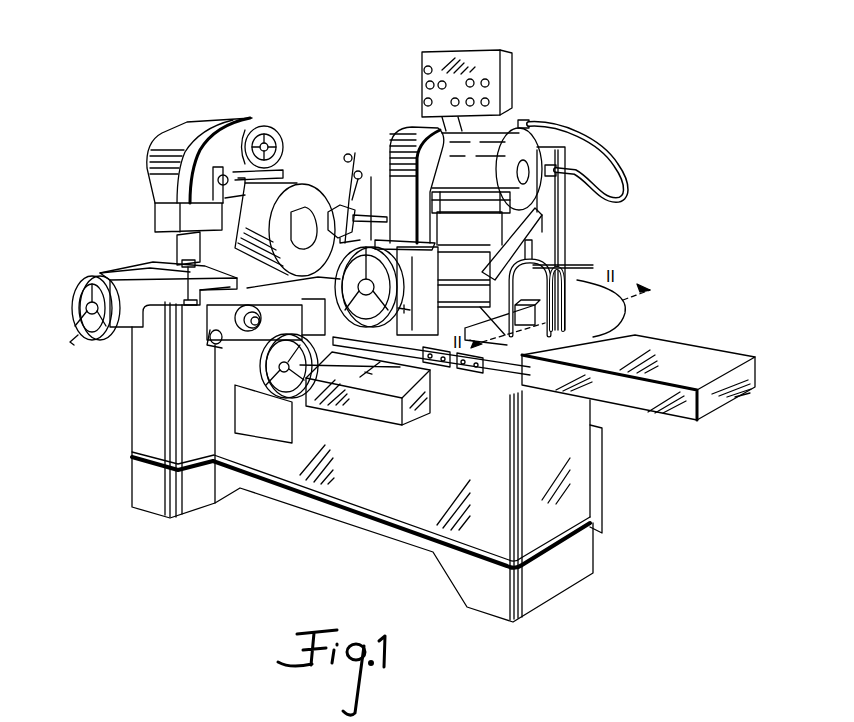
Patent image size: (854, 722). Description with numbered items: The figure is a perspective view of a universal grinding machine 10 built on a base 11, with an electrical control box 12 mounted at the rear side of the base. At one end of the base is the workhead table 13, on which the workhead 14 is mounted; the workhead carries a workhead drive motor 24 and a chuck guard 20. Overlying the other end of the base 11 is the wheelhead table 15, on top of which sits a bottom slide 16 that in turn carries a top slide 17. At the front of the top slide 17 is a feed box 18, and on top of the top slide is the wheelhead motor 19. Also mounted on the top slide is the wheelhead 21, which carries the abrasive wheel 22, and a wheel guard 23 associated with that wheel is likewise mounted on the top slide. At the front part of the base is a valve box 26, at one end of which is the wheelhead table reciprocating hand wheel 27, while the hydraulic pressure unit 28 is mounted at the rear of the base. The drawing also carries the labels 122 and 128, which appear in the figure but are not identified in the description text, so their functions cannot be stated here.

The grinding machine 10 is at (574, 130).
The base 11 is at (372, 507).
The electrical control box 12 is at (507, 60).
The workhead table 13 is at (130, 280).
The workhead 14 is at (177, 239).
The wheelhead table 15 is at (527, 330).
The bottom slide 16 is at (513, 373).
The top slide 17 is at (493, 373).
The feed box 18 is at (398, 274).
The wheelhead motor 19 is at (512, 135).
The chuck guard 20 is at (278, 188).
The wheelhead 21 is at (373, 227).
The abrasive wheel 22 is at (340, 200).
The wheel guard 23 is at (335, 215).
The workhead drive motor 24 is at (236, 122).
The valve box 26 is at (362, 402).
The wheelhead table reciprocating hand wheel 27 is at (259, 378).
The hydraulic pressure unit 28 is at (604, 487).
The support post 122 is at (565, 211).
The hand wheel 128 is at (73, 306).